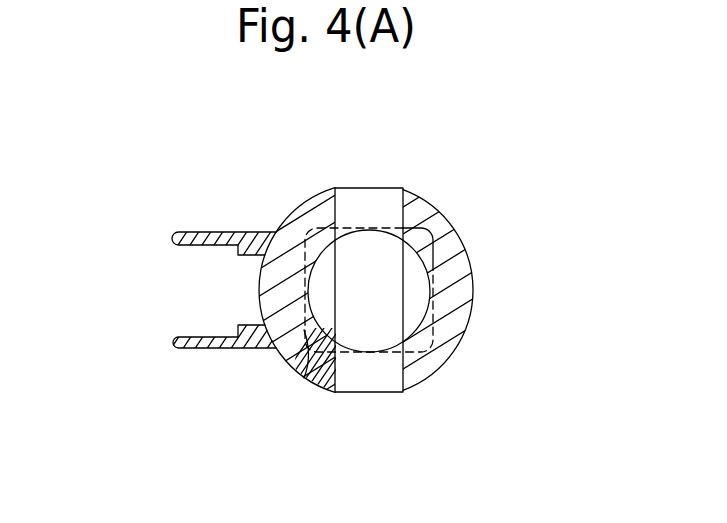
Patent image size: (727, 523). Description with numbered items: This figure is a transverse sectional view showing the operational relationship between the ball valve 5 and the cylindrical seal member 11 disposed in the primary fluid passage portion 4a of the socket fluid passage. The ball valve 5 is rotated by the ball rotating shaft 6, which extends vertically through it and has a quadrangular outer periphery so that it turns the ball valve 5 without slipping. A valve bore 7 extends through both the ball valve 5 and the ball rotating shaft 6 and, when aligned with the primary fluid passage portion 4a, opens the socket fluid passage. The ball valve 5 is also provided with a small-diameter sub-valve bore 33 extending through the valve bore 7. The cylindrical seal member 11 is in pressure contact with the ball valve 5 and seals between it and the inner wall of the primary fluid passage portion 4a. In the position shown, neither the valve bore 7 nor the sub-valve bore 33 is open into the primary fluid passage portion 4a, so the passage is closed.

The primary fluid passage portion 4a is at (166, 292).
The ball valve 5 is at (470, 256).
The ball rotating shaft 6 is at (426, 218).
The valve bore 7 is at (378, 202).
The cylindrical seal member 11 is at (215, 230).
The sub-valve bore 33 is at (308, 378).